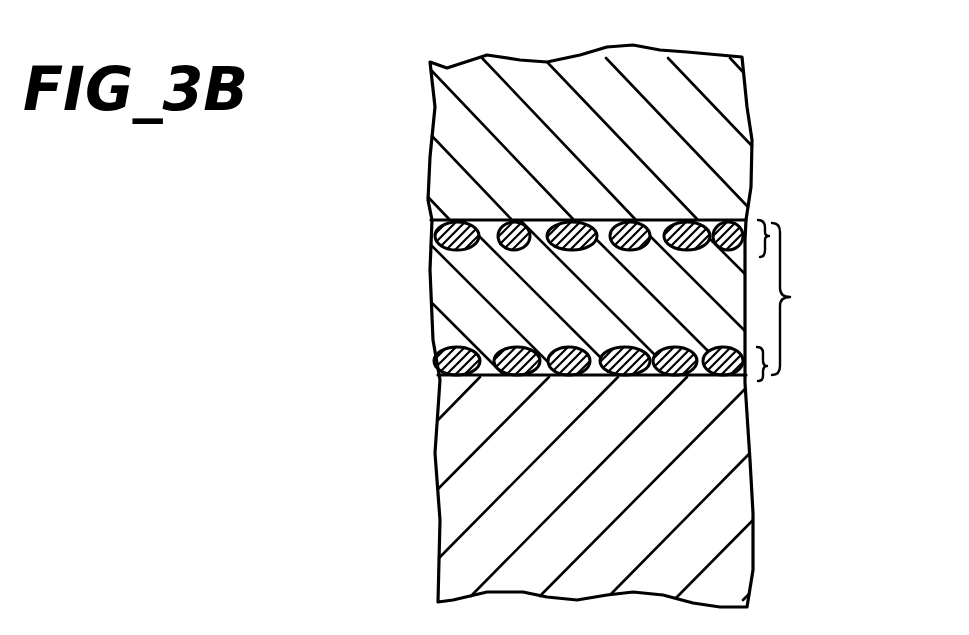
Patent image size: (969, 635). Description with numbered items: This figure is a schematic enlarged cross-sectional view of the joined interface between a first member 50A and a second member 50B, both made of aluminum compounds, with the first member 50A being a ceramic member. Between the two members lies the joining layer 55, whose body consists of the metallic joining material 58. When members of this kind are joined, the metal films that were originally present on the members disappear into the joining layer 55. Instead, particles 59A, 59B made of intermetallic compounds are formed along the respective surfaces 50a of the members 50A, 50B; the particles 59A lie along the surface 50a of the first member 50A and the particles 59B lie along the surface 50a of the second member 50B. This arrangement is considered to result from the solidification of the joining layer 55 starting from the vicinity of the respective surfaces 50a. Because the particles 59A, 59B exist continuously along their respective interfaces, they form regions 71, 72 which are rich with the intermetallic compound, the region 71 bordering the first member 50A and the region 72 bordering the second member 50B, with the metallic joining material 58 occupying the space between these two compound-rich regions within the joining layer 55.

The ceramic first member made of an aluminum compound 50A is at (723, 143).
The second member 50B is at (700, 482).
The surface of the first member 50a is at (443, 253).
The metallic joining material 58 is at (467, 288).
The dispersed phase made of intermetallic compound 59A is at (513, 187).
The dispersed phase made of intermetallic compound 59B is at (430, 343).
The joining layer 55 is at (806, 299).
The region rich with intermetallic compound 71 is at (768, 233).
The region rich with intermetallic compound 72 is at (767, 367).